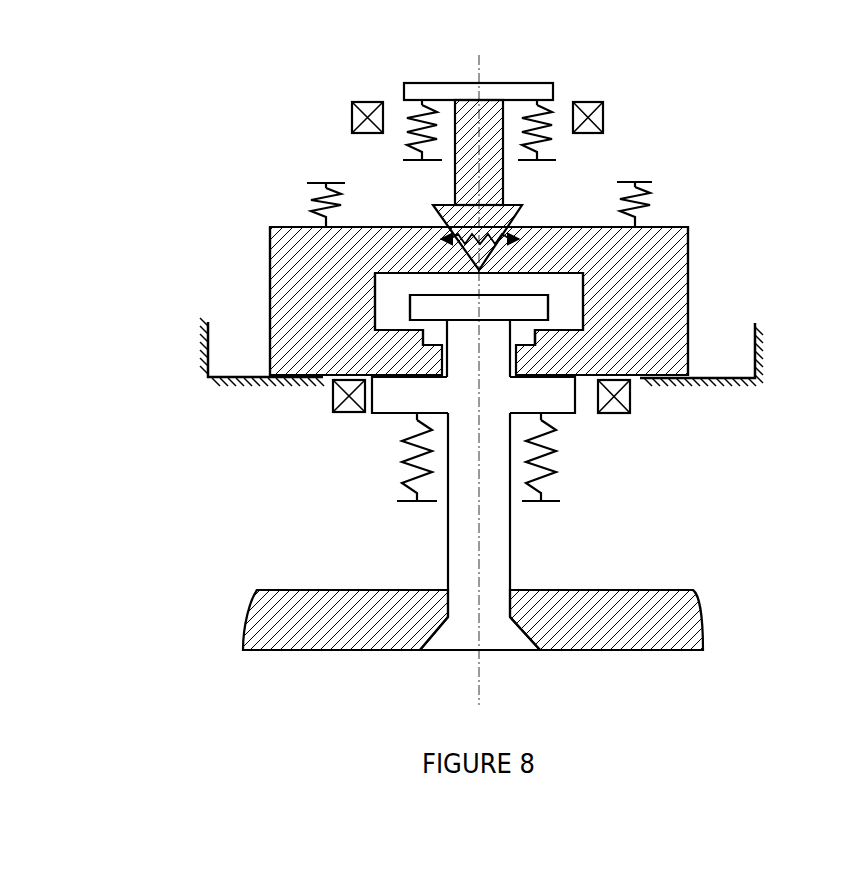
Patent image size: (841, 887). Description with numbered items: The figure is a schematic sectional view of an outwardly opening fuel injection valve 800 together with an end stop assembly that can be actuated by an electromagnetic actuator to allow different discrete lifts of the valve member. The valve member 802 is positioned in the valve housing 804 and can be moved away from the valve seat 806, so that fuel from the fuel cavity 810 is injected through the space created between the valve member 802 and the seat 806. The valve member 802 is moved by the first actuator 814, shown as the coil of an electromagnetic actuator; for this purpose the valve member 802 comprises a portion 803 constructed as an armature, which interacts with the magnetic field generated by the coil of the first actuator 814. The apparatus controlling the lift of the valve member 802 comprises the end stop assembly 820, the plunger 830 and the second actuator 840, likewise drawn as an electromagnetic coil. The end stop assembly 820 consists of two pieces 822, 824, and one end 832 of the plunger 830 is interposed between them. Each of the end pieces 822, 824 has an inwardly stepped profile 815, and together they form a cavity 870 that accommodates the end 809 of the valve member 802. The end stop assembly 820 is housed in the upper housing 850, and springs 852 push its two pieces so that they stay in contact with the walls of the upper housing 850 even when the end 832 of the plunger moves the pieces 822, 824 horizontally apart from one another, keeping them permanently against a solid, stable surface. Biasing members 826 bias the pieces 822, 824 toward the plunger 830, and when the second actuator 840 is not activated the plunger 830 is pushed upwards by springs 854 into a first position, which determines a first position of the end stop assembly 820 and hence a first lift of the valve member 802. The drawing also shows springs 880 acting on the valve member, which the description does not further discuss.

The fuel injection valve 800 is at (736, 136).
The valve member 802 is at (466, 549).
The portion constructed as an armature 803 is at (395, 400).
The valve housing 804 is at (586, 588).
The valve seat 806 is at (431, 637).
The end of valve member 809 is at (422, 312).
The fuel cavity 810 is at (636, 500).
The first actuator 814 is at (609, 418).
The inwardly stepped profile 815 is at (541, 346).
The end stop assembly 820 is at (693, 275).
The first piece of end stop assembly 822 is at (270, 250).
The second piece of end stop assembly 824 is at (650, 262).
The biasing members 826 is at (481, 231).
The plunger 830 is at (485, 158).
The end of plunger 832 is at (457, 207).
The second actuator 840 is at (605, 108).
The upper housing 850 is at (763, 382).
The springs 852 is at (648, 195).
The springs 854 is at (420, 112).
The cavity 870 is at (389, 287).
The pin return spring 880 is at (400, 466).